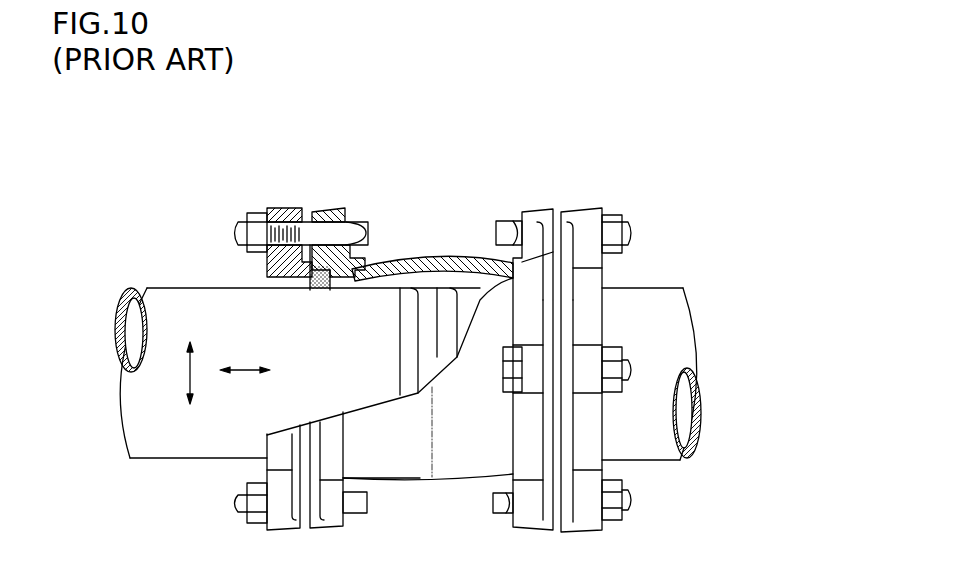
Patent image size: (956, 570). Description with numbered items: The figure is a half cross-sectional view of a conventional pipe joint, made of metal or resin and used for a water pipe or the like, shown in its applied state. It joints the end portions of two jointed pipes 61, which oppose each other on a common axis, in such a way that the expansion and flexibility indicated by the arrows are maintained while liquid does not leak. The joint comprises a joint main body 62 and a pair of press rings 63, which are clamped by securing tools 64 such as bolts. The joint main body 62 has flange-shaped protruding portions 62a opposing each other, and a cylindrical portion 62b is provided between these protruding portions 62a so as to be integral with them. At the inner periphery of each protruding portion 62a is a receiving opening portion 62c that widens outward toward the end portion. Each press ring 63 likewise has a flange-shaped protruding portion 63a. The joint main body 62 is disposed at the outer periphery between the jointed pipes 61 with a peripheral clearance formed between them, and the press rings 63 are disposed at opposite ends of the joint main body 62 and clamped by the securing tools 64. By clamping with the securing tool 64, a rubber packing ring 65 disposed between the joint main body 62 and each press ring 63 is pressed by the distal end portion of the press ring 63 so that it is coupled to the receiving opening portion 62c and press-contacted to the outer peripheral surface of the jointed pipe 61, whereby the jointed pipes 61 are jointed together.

The jointed pipe 61 is at (213, 446).
The joint main body 62 is at (478, 256).
The flange-shaped protruding portion 62a is at (333, 209).
The cylindrical portion 62b is at (450, 255).
The receiving opening portion 62c is at (348, 275).
The press ring 63 is at (275, 208).
The flange-shaped protruding portion of press ring 63a is at (290, 208).
The securing tool 64 is at (227, 222).
The rubber packing ring 65 is at (313, 287).